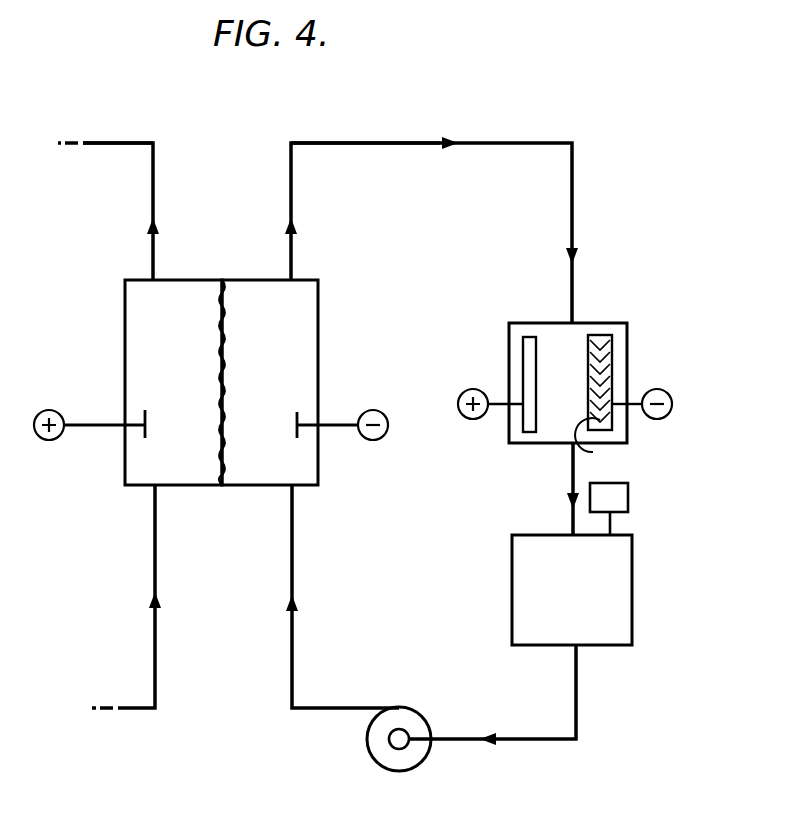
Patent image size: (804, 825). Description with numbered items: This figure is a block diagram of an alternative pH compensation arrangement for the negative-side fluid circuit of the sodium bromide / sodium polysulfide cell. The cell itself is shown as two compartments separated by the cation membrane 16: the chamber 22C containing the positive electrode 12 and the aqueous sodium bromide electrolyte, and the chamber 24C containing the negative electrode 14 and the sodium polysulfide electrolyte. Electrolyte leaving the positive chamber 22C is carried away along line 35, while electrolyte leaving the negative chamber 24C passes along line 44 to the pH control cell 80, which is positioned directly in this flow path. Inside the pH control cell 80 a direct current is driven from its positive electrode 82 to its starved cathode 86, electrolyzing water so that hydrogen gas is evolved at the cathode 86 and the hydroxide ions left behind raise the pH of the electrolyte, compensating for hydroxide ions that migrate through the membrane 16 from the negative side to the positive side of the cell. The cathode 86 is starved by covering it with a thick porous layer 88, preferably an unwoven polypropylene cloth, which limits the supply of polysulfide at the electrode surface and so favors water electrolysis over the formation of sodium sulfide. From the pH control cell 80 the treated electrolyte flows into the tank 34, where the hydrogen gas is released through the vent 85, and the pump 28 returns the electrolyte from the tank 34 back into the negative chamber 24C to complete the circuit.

The positive electrode 12 is at (92, 425).
The negative electrode 14 is at (340, 425).
The cation membrane 16 is at (218, 462).
The chamber 22C is at (170, 383).
The chamber 24C is at (274, 380).
The pump 28 is at (382, 755).
The tank 34 is at (632, 608).
The line 35 is at (106, 143).
The line 44 is at (370, 143).
The pH control cell 80 is at (628, 321).
The positive electrode 82 is at (523, 350).
The vent 85 is at (628, 500).
The starved cathode 86 is at (613, 358).
The thick porous layer 88 is at (593, 452).